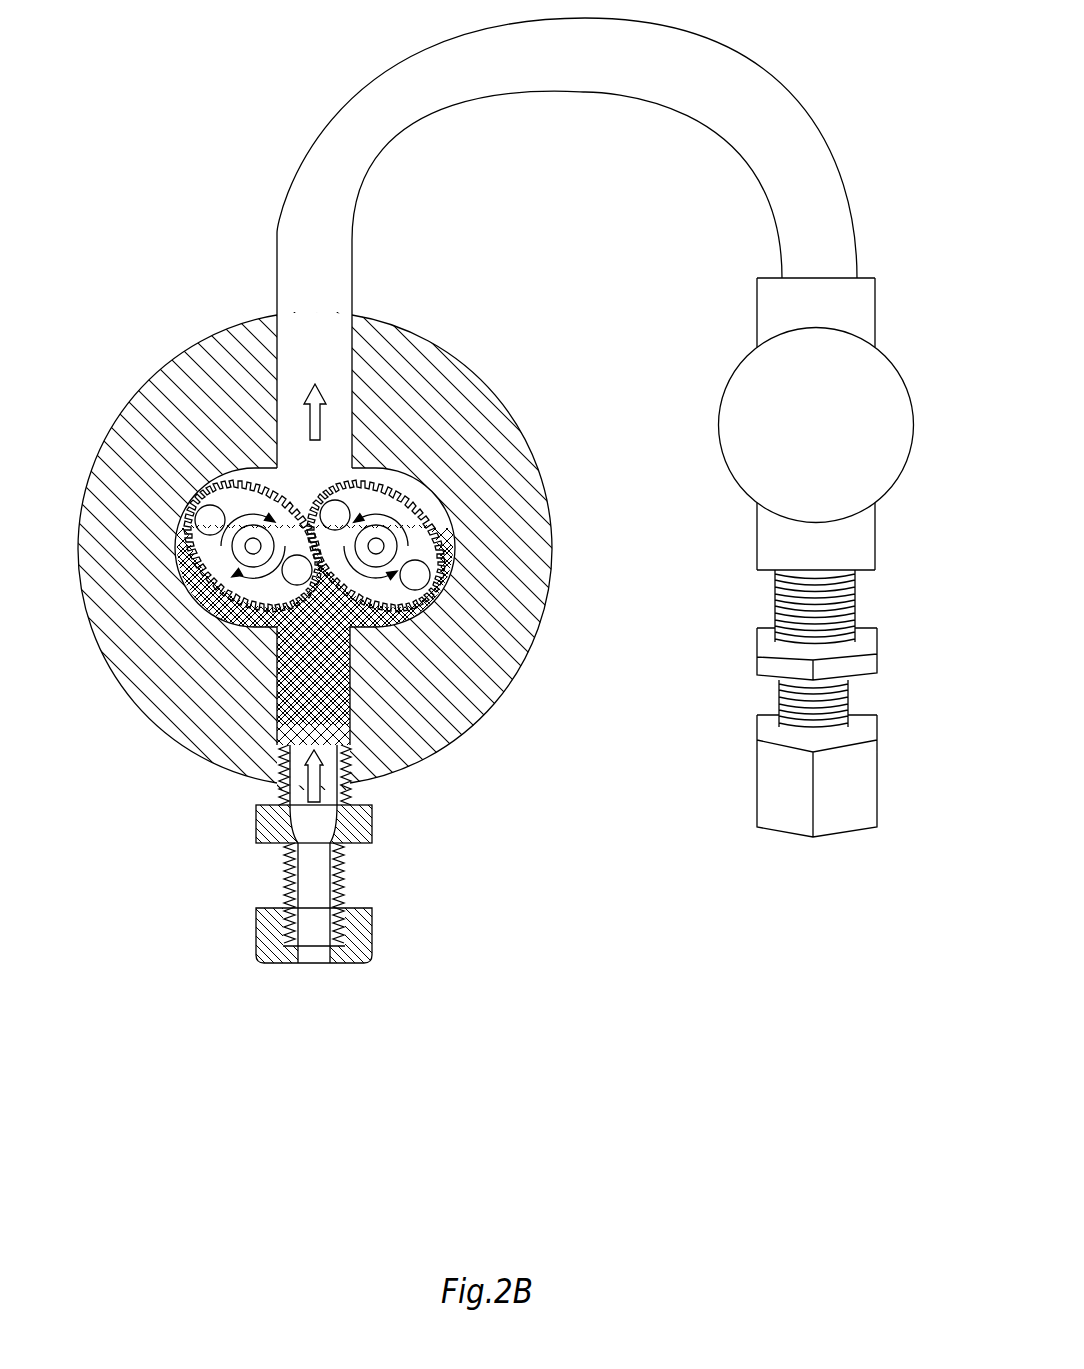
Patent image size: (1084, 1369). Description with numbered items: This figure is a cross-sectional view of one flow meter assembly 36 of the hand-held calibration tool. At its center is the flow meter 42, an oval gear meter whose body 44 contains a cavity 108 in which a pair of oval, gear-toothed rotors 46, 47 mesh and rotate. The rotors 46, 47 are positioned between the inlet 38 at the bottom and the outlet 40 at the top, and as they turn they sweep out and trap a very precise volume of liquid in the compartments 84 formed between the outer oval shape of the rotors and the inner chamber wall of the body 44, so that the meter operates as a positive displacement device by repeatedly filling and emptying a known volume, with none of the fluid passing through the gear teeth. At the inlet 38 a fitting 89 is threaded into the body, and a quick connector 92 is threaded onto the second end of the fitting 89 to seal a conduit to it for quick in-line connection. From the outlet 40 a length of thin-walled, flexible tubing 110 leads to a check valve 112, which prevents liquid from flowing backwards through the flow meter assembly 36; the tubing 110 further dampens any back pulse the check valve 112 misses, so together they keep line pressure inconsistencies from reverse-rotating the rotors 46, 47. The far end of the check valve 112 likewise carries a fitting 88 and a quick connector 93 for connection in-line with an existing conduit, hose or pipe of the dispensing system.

The flow meter assembly 36 is at (204, 255).
The inlet 38 is at (328, 780).
The outlet 40 is at (318, 347).
The flow meter 42 is at (534, 473).
The body 44 is at (460, 386).
The rotor 46 is at (222, 505).
The rotor 47 is at (423, 550).
The compartment 84 is at (197, 588).
The fitting 88 is at (865, 638).
The fitting 89 is at (257, 823).
The quick connector 92 is at (257, 933).
The quick connector 93 is at (860, 723).
The cavity 108 is at (315, 467).
The flexible tubing 110 is at (791, 220).
The check valve 112 is at (745, 412).